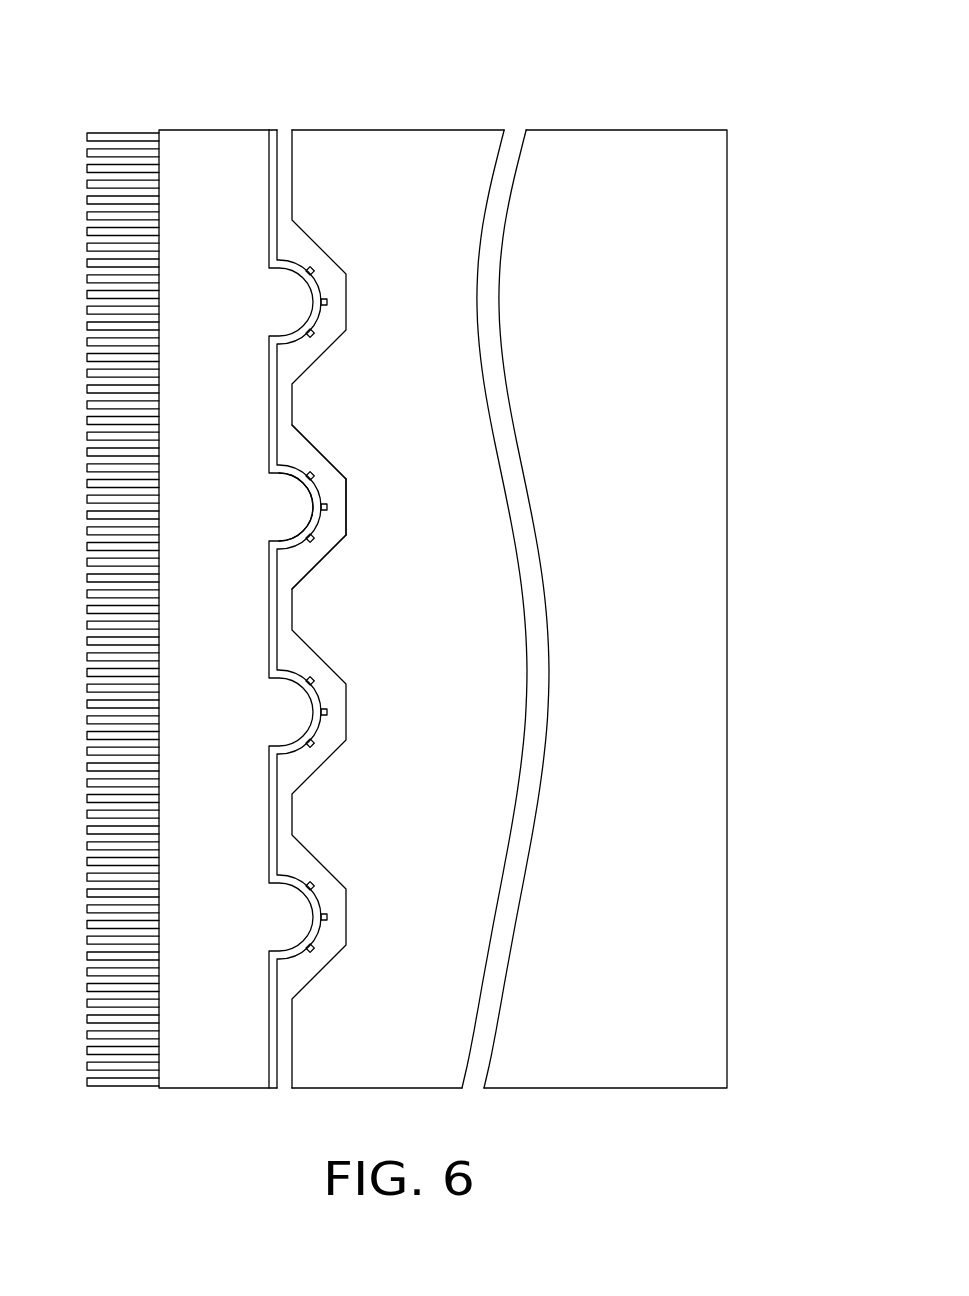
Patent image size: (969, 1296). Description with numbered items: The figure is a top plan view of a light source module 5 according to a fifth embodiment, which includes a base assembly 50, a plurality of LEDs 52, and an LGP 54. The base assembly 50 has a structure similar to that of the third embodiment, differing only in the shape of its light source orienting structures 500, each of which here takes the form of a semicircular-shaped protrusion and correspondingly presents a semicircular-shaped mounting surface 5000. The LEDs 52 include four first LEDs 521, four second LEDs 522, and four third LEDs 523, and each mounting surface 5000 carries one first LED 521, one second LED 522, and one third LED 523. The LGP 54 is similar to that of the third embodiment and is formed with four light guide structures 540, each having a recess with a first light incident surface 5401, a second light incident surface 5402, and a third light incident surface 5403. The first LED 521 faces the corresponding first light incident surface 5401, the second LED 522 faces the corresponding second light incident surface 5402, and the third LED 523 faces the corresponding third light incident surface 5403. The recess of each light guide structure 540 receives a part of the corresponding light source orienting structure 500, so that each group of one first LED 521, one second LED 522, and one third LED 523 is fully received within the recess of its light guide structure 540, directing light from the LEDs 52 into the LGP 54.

The light source module 5 is at (228, 68).
The base assembly 50 is at (215, 155).
The light source orienting structure 500 is at (288, 912).
The mounting surface 5000 is at (312, 507).
The LEDs 52 is at (803, 672).
The first LED 521 is at (313, 748).
The second LED 522 is at (327, 713).
The third LED 523 is at (315, 679).
The LGP 54 is at (397, 155).
The light guide structure 540 is at (362, 915).
The first light incident surface 5401 is at (324, 562).
The second light incident surface 5402 is at (348, 513).
The third light incident surface 5403 is at (324, 455).